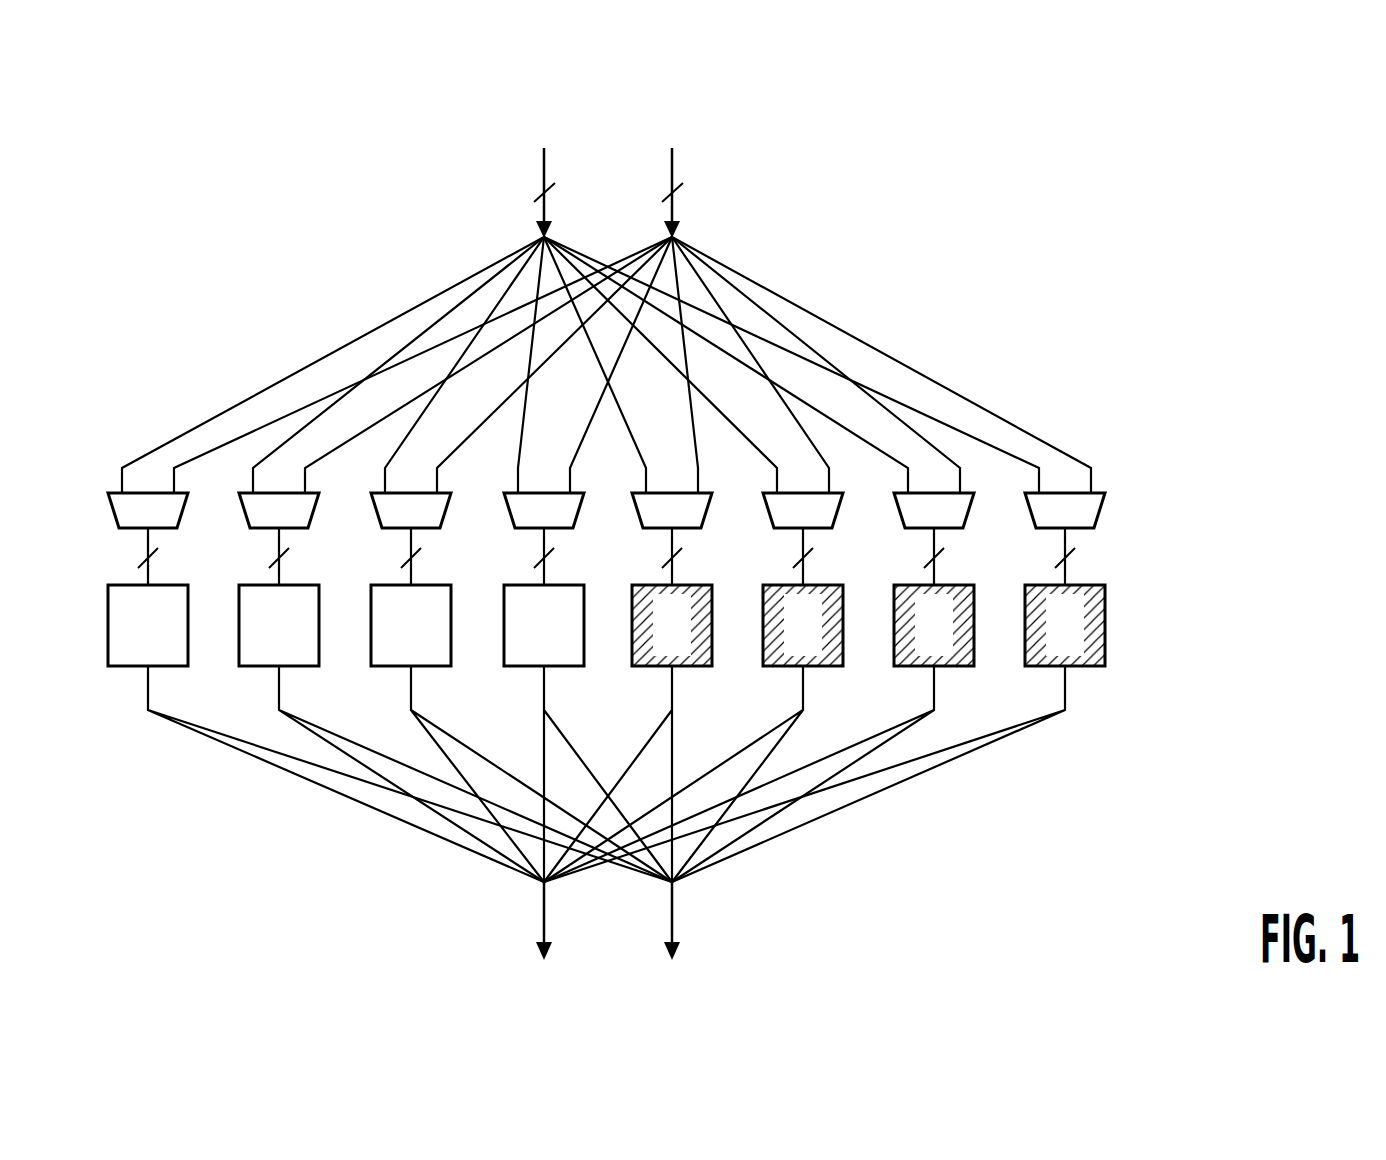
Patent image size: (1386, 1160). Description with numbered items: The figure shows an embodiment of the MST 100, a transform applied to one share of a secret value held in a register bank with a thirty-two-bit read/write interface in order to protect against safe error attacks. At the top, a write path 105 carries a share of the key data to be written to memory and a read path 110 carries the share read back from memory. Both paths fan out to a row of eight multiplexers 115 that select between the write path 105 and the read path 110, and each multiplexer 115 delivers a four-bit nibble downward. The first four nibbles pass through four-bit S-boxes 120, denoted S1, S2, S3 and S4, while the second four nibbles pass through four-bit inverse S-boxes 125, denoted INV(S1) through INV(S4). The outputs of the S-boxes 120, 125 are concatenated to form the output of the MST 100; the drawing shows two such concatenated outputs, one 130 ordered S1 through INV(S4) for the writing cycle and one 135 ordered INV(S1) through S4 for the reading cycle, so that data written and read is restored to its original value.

The MST 100 is at (142, 157).
The write path 105 is at (542, 163).
The read path 110 is at (674, 157).
The multiplexers 115 is at (250, 522).
The S-boxes 120 is at (239, 640).
The inverse S-boxes 125 is at (763, 640).
The first output 130 is at (540, 945).
The second output 135 is at (676, 945).